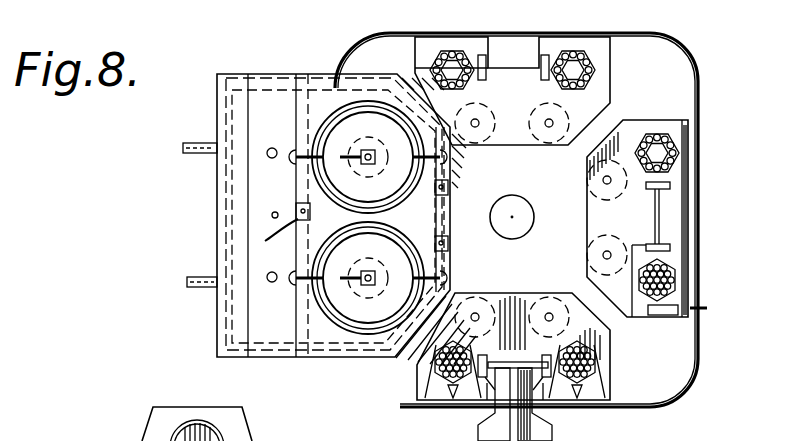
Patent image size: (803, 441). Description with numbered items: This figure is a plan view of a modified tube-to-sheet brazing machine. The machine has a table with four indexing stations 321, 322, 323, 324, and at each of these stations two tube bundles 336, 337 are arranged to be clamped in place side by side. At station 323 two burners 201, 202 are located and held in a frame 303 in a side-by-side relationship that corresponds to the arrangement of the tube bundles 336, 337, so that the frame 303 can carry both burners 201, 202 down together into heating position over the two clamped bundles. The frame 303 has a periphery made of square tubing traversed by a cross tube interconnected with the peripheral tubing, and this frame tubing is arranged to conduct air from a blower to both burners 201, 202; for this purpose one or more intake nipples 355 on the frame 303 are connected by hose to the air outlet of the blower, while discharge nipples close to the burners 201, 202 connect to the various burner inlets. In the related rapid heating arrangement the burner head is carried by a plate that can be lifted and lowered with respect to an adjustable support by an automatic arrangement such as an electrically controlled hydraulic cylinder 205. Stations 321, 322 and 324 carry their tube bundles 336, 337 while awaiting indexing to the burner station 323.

The burner 201 is at (352, 127).
The burner 202 is at (362, 312).
The electrically controlled hydraulic cylinder 205 is at (272, 215).
The intake nipple 355 is at (206, 276).
The frame 303 is at (390, 357).
The indexing station 322 is at (492, 147).
The indexing station 323 is at (410, 222).
The indexing station 321 is at (607, 214).
The indexing station 324 is at (565, 293).
The tube bundle 336 is at (455, 398).
The tube bundle 337 is at (578, 395).